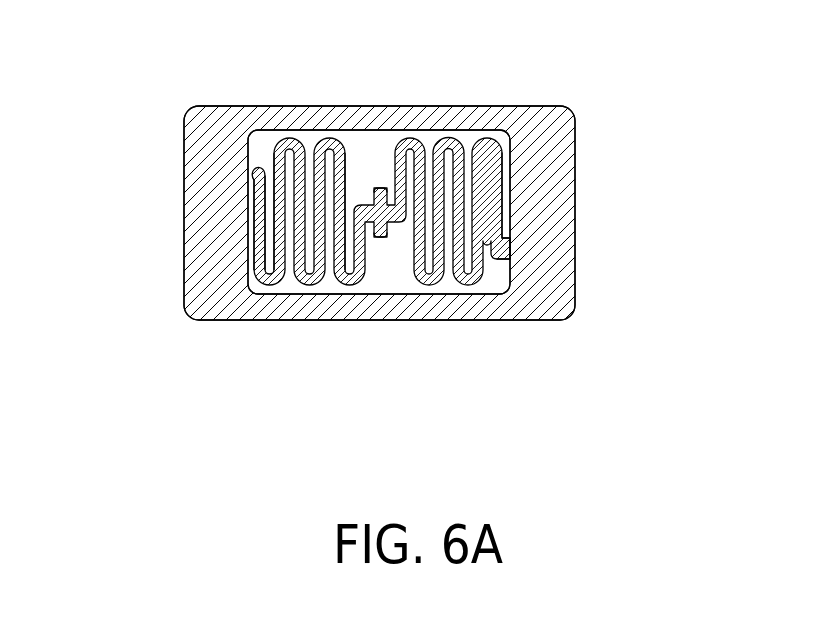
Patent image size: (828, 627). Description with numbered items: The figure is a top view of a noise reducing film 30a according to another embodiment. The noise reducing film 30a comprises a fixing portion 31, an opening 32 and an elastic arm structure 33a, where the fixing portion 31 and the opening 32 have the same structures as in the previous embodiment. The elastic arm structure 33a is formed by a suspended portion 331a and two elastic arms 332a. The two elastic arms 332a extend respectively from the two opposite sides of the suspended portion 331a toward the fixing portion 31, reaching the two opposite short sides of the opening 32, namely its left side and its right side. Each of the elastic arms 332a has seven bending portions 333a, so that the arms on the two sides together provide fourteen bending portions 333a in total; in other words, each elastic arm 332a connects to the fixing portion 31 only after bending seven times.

The noise reducing film 30a is at (176, 92).
The fixing portion 31 is at (560, 210).
The opening 32 is at (472, 137).
The elastic arm structure 33a is at (408, 140).
The suspended portion 331a is at (385, 237).
The elastic arm 332a is at (255, 282).
The bending portion 333a is at (362, 207).